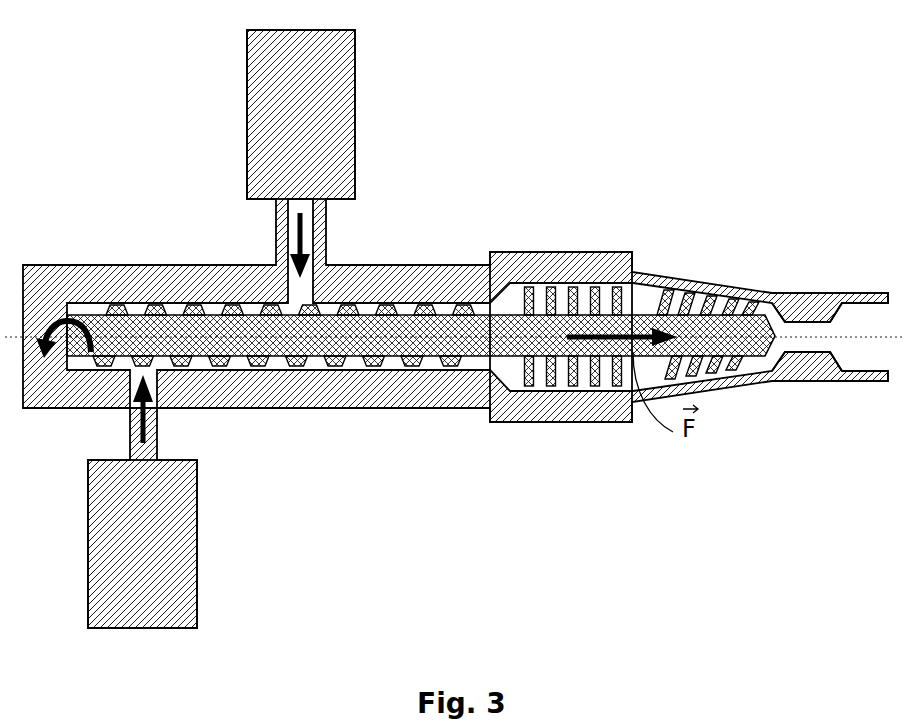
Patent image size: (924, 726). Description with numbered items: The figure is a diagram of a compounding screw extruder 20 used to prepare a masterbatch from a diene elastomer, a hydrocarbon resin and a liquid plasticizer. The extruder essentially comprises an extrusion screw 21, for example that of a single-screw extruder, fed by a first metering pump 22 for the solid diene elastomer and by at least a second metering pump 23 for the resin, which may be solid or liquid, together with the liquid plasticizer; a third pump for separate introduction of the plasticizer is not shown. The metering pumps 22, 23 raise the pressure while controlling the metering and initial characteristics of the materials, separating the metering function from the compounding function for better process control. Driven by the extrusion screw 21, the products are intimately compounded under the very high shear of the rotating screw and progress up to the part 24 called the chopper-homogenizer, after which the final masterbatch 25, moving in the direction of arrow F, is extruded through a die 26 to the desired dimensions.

The compounding screw extruder 20 is at (592, 210).
The extrusion screw 21 is at (317, 338).
The first metering pump 22 is at (152, 550).
The second metering pump 23 is at (290, 110).
The chopper-homogenizer 24 is at (569, 390).
The final masterbatch 25 is at (826, 338).
The die 26 is at (862, 297).